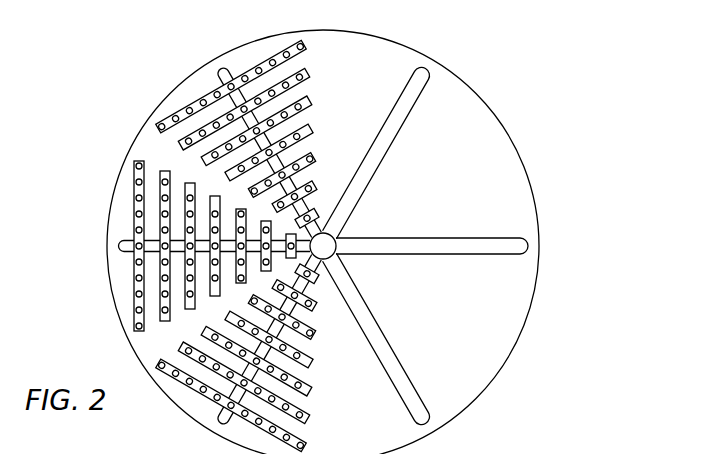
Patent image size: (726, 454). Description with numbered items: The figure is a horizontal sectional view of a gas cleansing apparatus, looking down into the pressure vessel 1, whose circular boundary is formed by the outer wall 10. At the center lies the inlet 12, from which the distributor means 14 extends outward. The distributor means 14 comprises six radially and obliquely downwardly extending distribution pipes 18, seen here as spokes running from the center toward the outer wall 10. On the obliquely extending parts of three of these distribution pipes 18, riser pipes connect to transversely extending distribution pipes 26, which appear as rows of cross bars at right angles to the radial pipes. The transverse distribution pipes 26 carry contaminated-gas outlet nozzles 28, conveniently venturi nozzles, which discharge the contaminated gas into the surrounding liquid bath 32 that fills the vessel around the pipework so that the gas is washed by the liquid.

The pressure vessel 1 is at (490, 86).
The outer wall 10 is at (530, 177).
The inlet 12 is at (338, 237).
The distributor means 14 is at (324, 200).
The distribution pipes 18 is at (152, 242).
The transversely extending distribution pipes 26 is at (193, 100).
The contaminated-gas outlet nozzles 28 is at (163, 194).
The liquid bath 32 is at (494, 181).